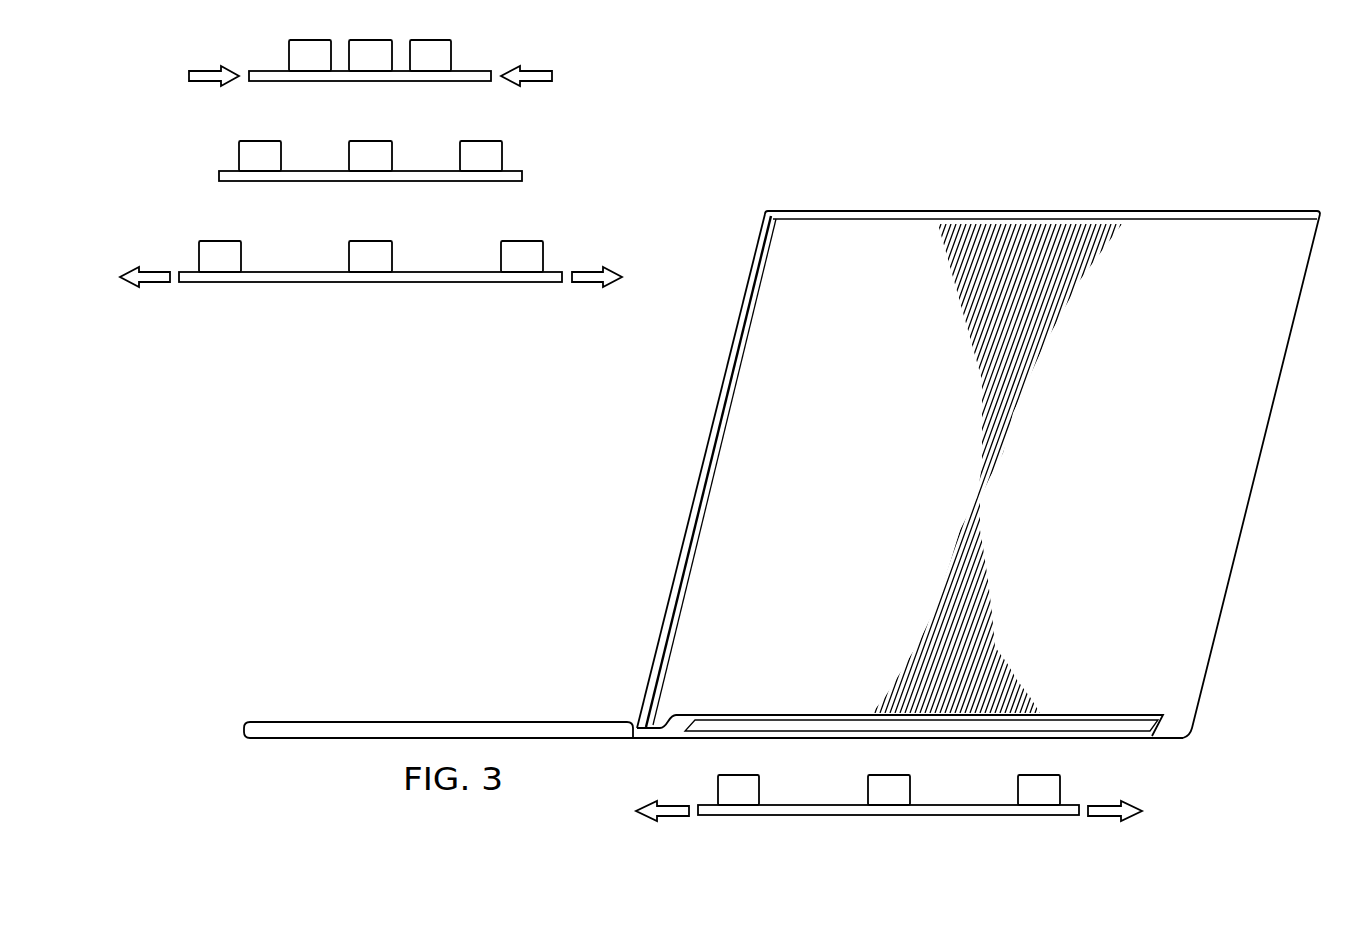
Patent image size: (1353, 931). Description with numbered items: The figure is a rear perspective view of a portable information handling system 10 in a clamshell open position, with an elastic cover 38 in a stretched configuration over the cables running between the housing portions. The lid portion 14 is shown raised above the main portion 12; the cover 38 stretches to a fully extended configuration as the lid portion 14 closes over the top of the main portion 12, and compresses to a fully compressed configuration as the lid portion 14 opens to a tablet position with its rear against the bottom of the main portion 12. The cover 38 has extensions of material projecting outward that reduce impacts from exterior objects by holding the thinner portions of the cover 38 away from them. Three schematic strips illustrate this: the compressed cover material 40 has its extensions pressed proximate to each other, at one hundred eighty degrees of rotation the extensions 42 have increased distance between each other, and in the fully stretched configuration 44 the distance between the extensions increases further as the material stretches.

The portable information handling system 10 is at (979, 85).
The main portion 12 is at (442, 732).
The lid portion 14 is at (858, 227).
The elastic cover 38 is at (1150, 722).
The compressed cover material 40 is at (369, 82).
The extensions 42 is at (369, 182).
The fully stretched configuration 44 is at (369, 283).